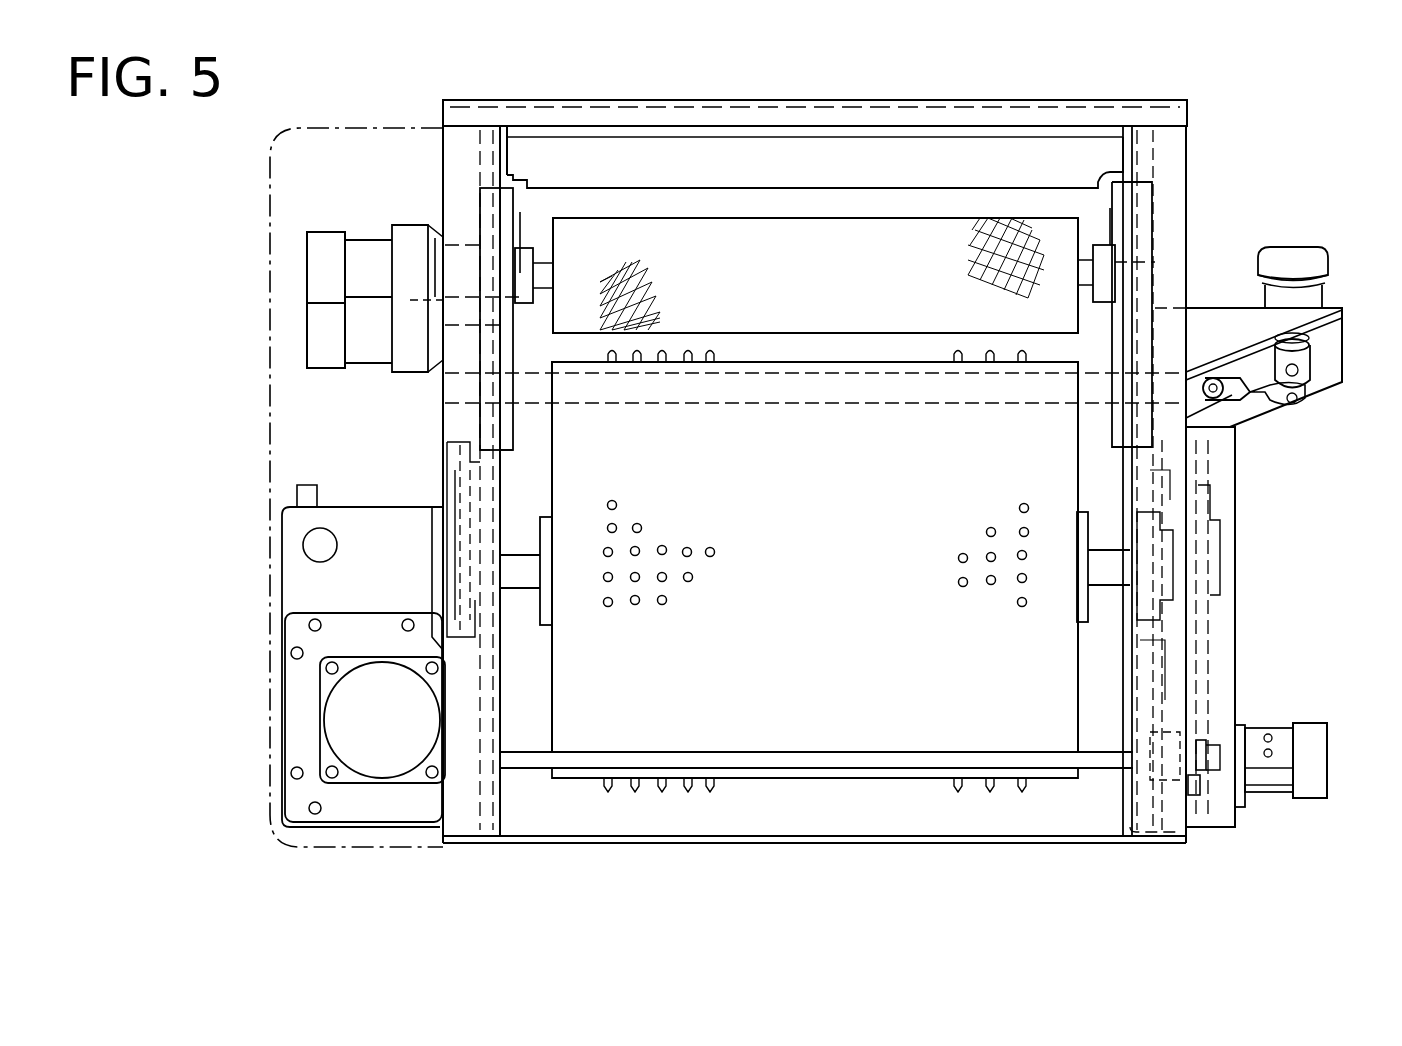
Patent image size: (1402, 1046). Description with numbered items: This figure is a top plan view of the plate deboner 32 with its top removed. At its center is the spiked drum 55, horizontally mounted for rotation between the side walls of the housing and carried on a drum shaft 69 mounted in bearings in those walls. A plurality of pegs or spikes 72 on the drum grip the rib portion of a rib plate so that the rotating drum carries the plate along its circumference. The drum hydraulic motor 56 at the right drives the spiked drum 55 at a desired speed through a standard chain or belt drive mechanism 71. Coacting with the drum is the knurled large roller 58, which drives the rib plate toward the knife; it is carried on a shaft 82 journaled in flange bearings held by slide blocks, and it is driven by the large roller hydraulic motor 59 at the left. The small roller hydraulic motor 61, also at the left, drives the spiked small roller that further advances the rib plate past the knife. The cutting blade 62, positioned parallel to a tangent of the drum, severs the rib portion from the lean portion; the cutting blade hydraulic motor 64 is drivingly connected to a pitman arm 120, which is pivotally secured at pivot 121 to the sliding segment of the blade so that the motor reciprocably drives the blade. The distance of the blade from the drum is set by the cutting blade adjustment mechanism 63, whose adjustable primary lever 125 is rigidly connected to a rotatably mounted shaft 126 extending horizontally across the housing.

The plate deboner 32 is at (230, 513).
The spiked drum 55 is at (565, 780).
The drum hydraulic motor 56 is at (1315, 778).
The knurled large roller 58 is at (880, 218).
The large roller hydraulic motor 59 is at (318, 266).
The small roller hydraulic motor 61 is at (308, 346).
The cutting blade 62 is at (1196, 393).
The cutting blade adjustment mechanism 63 is at (1192, 790).
The cutting blade hydraulic motor 64 is at (1295, 255).
The drum shaft 69 is at (512, 590).
The chain or belt drive mechanism 71 is at (1210, 670).
The pegs or spikes 72 is at (712, 782).
The shaft 82 is at (545, 262).
The pitman arm 120 is at (1250, 395).
The pivot 121 is at (1213, 385).
The primary lever 125 is at (1205, 748).
The shaft 126 is at (1076, 752).